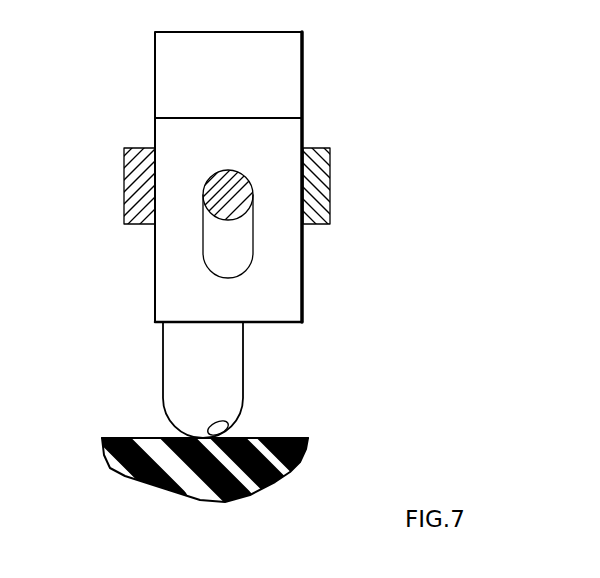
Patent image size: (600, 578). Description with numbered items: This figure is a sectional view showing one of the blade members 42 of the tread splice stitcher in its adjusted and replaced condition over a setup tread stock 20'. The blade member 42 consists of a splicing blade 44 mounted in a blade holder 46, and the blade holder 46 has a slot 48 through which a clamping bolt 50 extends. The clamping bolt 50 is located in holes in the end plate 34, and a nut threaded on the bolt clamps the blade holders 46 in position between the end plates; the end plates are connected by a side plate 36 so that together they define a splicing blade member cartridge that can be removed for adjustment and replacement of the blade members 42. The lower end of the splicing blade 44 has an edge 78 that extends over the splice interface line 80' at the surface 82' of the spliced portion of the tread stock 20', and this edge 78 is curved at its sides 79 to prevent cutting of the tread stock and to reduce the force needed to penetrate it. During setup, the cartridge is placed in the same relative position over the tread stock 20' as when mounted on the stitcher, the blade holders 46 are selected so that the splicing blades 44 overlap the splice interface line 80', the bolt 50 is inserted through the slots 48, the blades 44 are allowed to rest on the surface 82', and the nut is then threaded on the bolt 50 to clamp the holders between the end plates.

The blade member 42 is at (304, 61).
The end plate 34 is at (130, 189).
The side plate 36 is at (327, 160).
The clamping bolt 50 is at (238, 198).
The slot 48 is at (247, 240).
The blade holder 46 is at (288, 307).
The splicing blade 44 is at (174, 361).
The sides 79 is at (173, 421).
The splice interface line 80' is at (256, 420).
The surface 82' is at (244, 423).
The edge 78 is at (273, 473).
The tread stock 20' is at (113, 496).